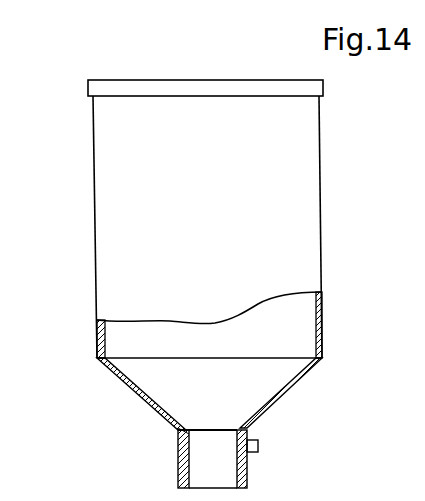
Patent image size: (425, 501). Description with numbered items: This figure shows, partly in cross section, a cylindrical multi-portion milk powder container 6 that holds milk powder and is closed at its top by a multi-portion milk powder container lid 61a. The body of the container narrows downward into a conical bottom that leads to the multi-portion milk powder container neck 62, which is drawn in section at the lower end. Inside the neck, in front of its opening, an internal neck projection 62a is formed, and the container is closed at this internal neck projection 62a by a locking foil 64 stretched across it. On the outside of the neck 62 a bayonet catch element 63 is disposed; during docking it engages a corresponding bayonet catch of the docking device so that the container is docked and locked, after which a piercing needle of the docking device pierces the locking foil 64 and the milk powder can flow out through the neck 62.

The container 6 is at (297, 196).
The multi-portion milk powder container lid 61a is at (147, 89).
The multi-portion milk powder container neck 62 is at (248, 462).
The internal neck projection 62a is at (177, 431).
The bayonet catch element 63 is at (255, 443).
The locking foil 64 is at (183, 432).